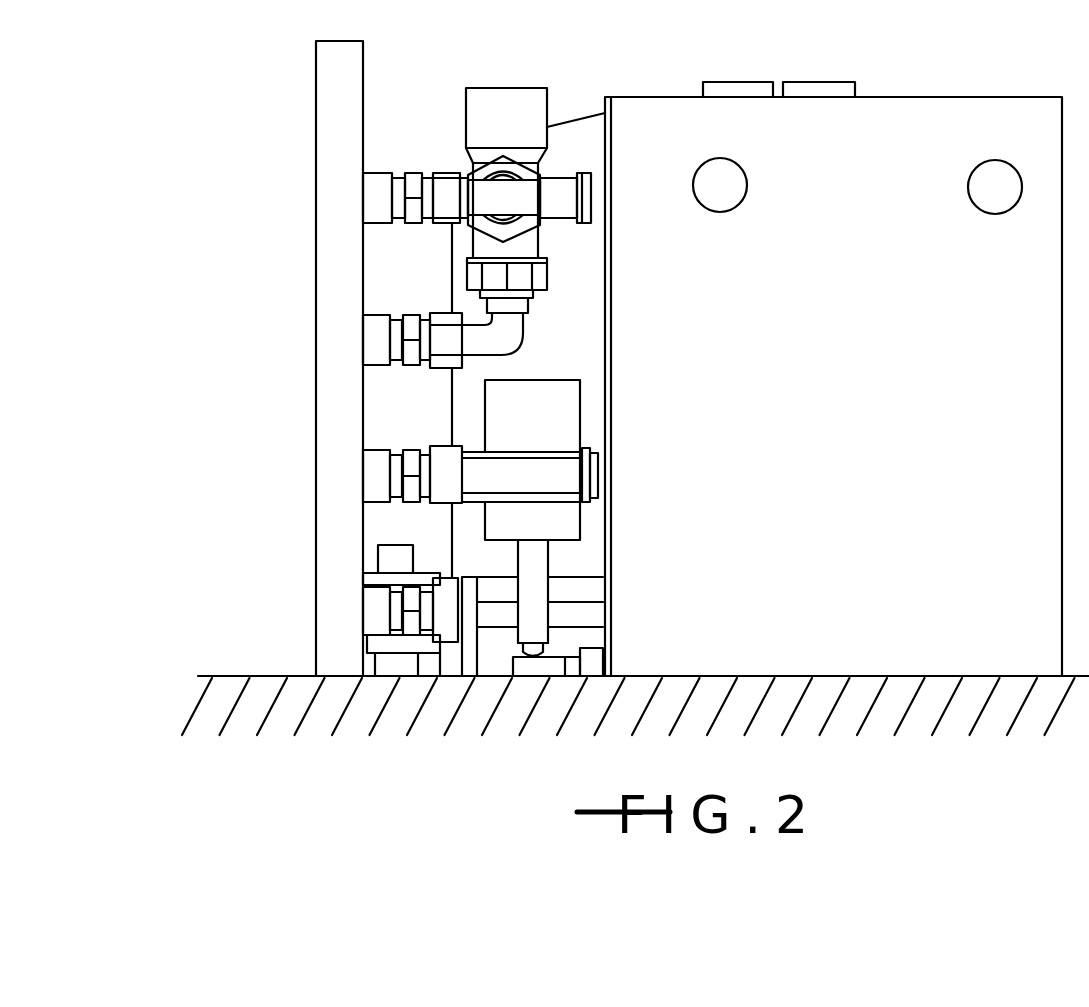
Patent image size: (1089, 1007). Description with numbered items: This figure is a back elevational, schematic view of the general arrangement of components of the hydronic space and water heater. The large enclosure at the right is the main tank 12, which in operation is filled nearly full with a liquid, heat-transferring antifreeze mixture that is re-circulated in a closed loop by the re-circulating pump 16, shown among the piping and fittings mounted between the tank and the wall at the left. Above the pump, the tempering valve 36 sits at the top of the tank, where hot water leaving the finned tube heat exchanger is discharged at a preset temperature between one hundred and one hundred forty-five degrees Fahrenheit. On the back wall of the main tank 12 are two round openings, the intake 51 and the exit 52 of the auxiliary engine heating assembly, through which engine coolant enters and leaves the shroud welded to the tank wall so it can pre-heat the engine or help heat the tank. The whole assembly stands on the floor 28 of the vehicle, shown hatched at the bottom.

The main tank 12 is at (926, 179).
The re-circulating pump 16 is at (550, 378).
The floor 28 is at (242, 676).
The tempering valve 36 is at (527, 112).
The intake 51 is at (988, 162).
The exit 52 is at (747, 177).